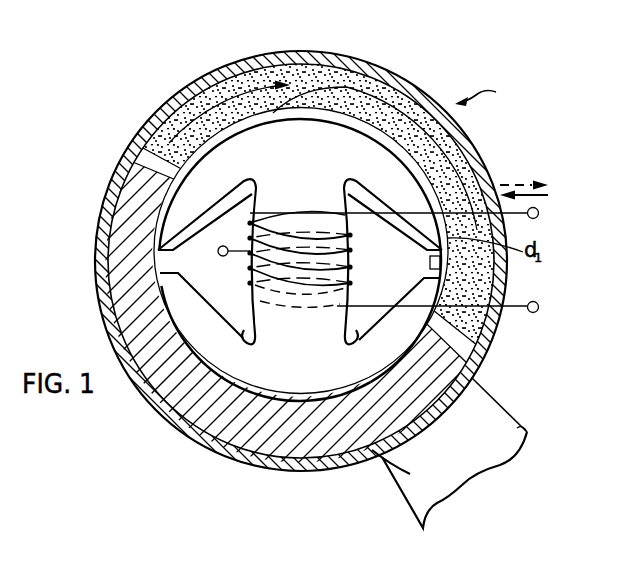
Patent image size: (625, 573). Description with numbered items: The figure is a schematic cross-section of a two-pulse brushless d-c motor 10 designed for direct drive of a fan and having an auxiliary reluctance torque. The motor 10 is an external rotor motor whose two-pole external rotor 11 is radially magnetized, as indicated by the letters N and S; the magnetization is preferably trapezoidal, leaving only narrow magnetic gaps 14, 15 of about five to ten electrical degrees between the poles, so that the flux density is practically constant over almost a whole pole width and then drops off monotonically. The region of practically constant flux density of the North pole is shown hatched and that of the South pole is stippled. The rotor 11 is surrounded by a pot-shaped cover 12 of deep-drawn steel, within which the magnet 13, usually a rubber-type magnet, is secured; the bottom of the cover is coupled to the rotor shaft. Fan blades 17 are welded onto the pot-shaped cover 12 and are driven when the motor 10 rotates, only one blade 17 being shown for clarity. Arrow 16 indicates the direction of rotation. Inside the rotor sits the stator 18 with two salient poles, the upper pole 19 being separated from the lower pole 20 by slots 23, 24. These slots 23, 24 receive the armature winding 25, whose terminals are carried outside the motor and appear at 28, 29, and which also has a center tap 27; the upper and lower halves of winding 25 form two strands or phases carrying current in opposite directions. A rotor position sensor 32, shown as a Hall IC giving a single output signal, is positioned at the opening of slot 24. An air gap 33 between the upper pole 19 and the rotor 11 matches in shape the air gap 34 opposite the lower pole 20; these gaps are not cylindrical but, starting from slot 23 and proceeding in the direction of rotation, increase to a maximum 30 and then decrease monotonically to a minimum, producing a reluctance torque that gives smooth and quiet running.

The two-pulse brushless d-c motor 10 is at (139, 88).
The external rotor 11 is at (484, 93).
The pot-shaped cover 12 is at (383, 77).
The magnet 13 is at (443, 155).
The magnetic gap 14 is at (121, 163).
The magnetic gap 15 is at (462, 348).
The arrow 16 is at (210, 105).
The fan blade 17 is at (528, 438).
The stator 18 is at (292, 167).
The upper pole 19 is at (318, 134).
The lower pole 20 is at (382, 453).
The slot 23 is at (256, 338).
The slot 24 is at (338, 340).
The armature winding 25 is at (302, 224).
The center tap 27 is at (224, 257).
The terminal 28 is at (539, 213).
The terminal 29 is at (539, 307).
The maximum of the air gap 30 is at (151, 163).
The rotor position sensor 32 is at (430, 262).
The air gap 33 is at (290, 93).
The air gap 34 is at (290, 401).